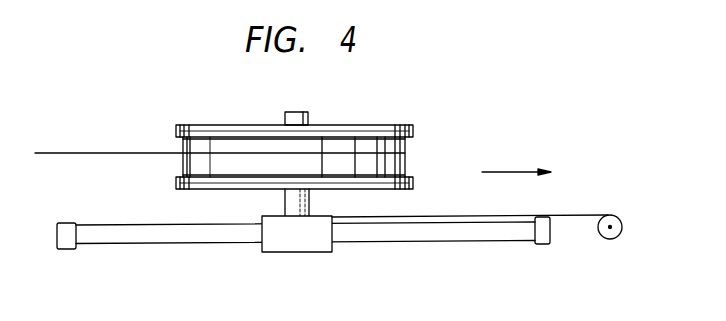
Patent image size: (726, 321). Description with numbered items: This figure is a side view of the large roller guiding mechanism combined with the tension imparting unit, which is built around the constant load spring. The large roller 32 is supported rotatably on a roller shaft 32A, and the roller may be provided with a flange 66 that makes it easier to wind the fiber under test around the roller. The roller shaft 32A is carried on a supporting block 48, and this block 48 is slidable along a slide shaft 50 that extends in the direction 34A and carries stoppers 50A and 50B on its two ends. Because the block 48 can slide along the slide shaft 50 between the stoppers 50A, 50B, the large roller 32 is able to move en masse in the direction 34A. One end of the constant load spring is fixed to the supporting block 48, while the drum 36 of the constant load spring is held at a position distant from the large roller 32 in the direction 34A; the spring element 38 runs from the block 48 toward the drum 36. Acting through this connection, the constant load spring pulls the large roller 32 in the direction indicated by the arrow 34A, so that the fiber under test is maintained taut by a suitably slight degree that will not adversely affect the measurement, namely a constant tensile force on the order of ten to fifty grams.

The large roller 32 is at (230, 125).
The roller shaft 32A is at (296, 112).
The flange 66 is at (415, 180).
The direction 34A is at (518, 171).
The drive belt / line 38 is at (578, 215).
The drum 36 is at (606, 238).
The supporting block 48 is at (315, 252).
The slide shaft 50 is at (212, 237).
The stopper 50A is at (68, 249).
The stopper 50B is at (542, 244).